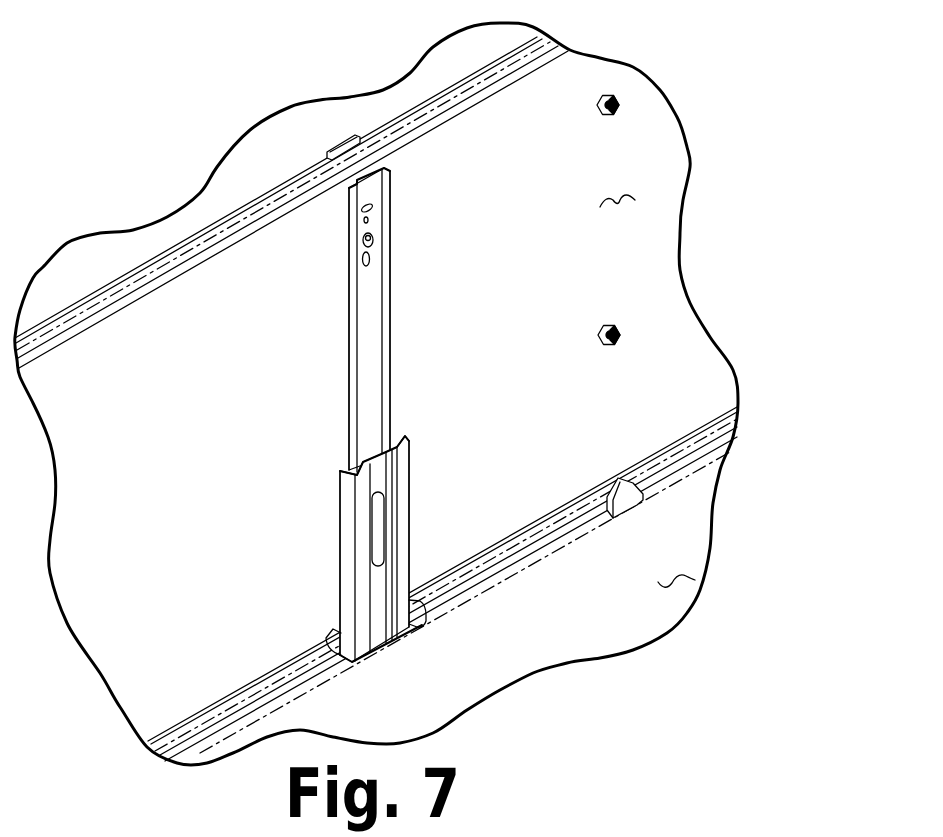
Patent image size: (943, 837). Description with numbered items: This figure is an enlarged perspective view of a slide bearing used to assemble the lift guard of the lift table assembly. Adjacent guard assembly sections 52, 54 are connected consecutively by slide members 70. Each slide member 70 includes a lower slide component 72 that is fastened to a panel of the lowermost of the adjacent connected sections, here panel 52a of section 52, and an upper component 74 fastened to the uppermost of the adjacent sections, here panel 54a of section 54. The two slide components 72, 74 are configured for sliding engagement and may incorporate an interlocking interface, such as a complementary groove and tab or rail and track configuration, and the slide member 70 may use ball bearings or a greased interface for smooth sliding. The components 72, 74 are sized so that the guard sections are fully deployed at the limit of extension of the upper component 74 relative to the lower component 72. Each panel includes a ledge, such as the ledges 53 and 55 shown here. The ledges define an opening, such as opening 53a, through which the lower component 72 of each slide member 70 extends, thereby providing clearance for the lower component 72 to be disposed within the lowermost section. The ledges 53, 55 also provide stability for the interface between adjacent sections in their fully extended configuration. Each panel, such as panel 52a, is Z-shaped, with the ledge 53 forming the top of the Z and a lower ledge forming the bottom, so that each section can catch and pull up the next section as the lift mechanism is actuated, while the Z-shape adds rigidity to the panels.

The guard assembly section 52 is at (695, 505).
The panel 52a is at (680, 580).
The ledge 53 is at (667, 452).
The opening 53a is at (423, 625).
The guard assembly section 54 is at (667, 150).
The panel 54a is at (620, 200).
The ledge 55 is at (509, 70).
The slide member 70 is at (330, 465).
The lower slide component 72 is at (403, 520).
The upper component 74 is at (378, 293).